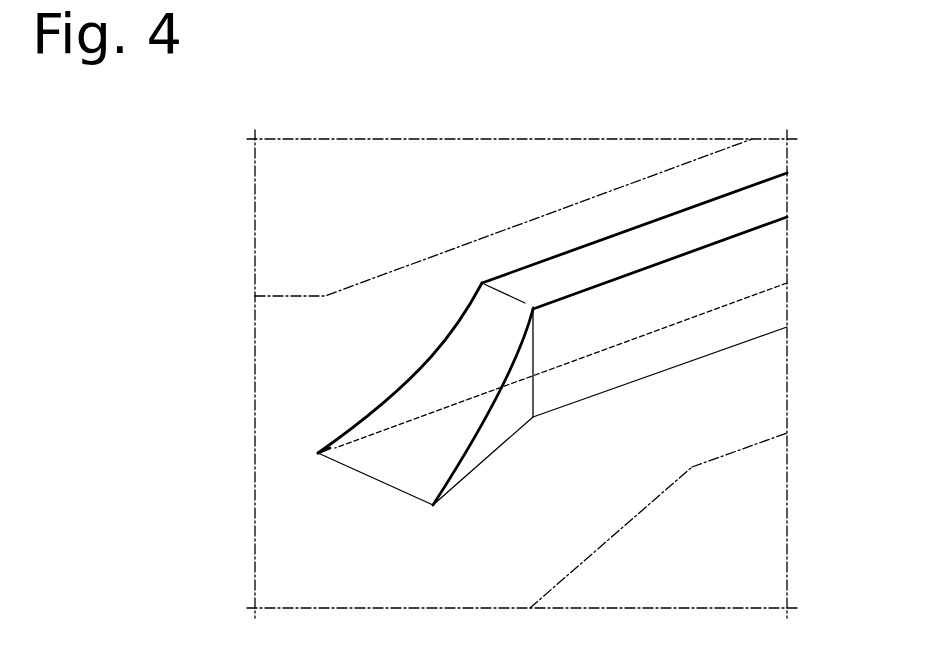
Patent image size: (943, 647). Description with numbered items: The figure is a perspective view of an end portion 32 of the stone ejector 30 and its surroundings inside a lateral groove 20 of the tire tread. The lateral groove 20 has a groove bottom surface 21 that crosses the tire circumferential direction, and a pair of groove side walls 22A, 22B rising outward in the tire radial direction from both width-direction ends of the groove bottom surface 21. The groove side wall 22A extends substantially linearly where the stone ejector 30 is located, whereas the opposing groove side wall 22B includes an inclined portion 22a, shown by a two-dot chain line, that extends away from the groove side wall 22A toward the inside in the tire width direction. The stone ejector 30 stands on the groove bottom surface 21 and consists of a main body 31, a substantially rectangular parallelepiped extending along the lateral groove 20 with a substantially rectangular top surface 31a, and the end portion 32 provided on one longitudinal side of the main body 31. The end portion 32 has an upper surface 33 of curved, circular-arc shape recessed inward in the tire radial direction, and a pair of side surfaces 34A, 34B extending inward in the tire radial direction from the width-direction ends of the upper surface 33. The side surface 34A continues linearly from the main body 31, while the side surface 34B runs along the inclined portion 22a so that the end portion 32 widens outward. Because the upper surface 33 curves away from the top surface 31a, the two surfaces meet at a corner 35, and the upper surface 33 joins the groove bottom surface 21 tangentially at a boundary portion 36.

The lateral groove 20 is at (586, 340).
The groove bottom surface 21 is at (750, 400).
The groove side wall 22A is at (365, 294).
The groove side wall 22B is at (631, 520).
The inclined portion 22a is at (628, 511).
The stone ejector 30 is at (534, 337).
The main body 31 is at (634, 231).
The top surface 31a is at (582, 262).
The end portion 32 is at (471, 357).
The upper surface 33 is at (413, 395).
The side surface 34A is at (425, 396).
The side surface 34B is at (508, 421).
The corner 35 is at (495, 283).
The boundary portion 36 is at (368, 478).